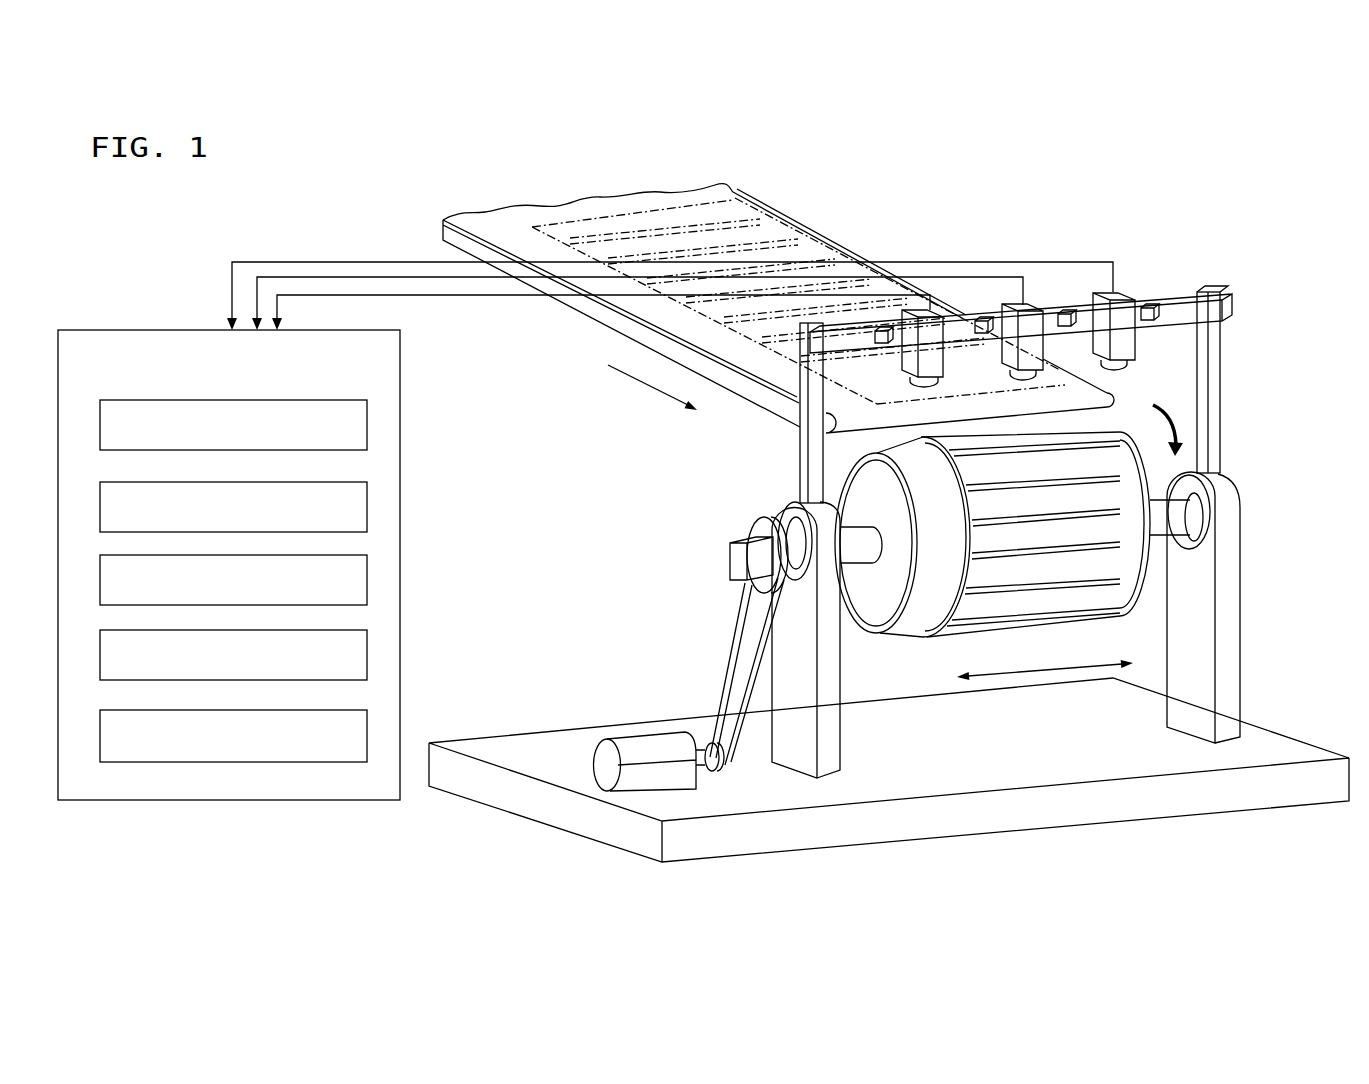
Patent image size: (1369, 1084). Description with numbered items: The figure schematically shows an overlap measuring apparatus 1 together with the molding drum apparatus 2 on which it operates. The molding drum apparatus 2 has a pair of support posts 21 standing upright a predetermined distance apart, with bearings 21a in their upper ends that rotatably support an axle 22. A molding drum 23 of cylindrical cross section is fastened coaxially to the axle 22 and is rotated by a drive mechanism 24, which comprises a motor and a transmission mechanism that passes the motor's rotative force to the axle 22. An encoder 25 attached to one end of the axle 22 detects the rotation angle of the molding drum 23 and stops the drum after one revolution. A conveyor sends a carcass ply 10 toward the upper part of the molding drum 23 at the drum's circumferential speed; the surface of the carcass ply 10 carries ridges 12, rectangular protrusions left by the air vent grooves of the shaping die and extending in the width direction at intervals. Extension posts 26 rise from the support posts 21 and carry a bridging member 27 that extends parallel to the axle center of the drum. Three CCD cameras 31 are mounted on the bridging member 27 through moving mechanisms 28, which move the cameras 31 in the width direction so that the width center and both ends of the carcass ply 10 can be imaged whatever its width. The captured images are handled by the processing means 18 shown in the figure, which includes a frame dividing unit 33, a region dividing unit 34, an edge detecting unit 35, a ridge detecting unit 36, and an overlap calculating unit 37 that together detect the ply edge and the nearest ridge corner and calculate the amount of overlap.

The overlap measuring apparatus 1 is at (378, 252).
The molding drum apparatus 2 is at (697, 618).
The carcass ply 10 is at (1030, 612).
The ridges 12 is at (1117, 438).
The processing means 18 is at (229, 565).
The support posts 21 is at (823, 693).
The bearings 21a is at (790, 587).
The axle 22 is at (860, 550).
The molding drum 23 is at (905, 614).
The drive mechanism 24 is at (670, 730).
The encoder 25 is at (737, 563).
The extension posts 26 is at (798, 463).
The bridging member 27 is at (1197, 307).
The moving mechanisms 28 is at (890, 342).
The CCD cameras 31 is at (933, 311).
The frame dividing unit 33 is at (233, 425).
The region dividing unit 34 is at (233, 506).
The edge detecting unit 35 is at (233, 580).
The ridge detecting unit 36 is at (233, 654).
The overlap calculating unit 37 is at (233, 736).